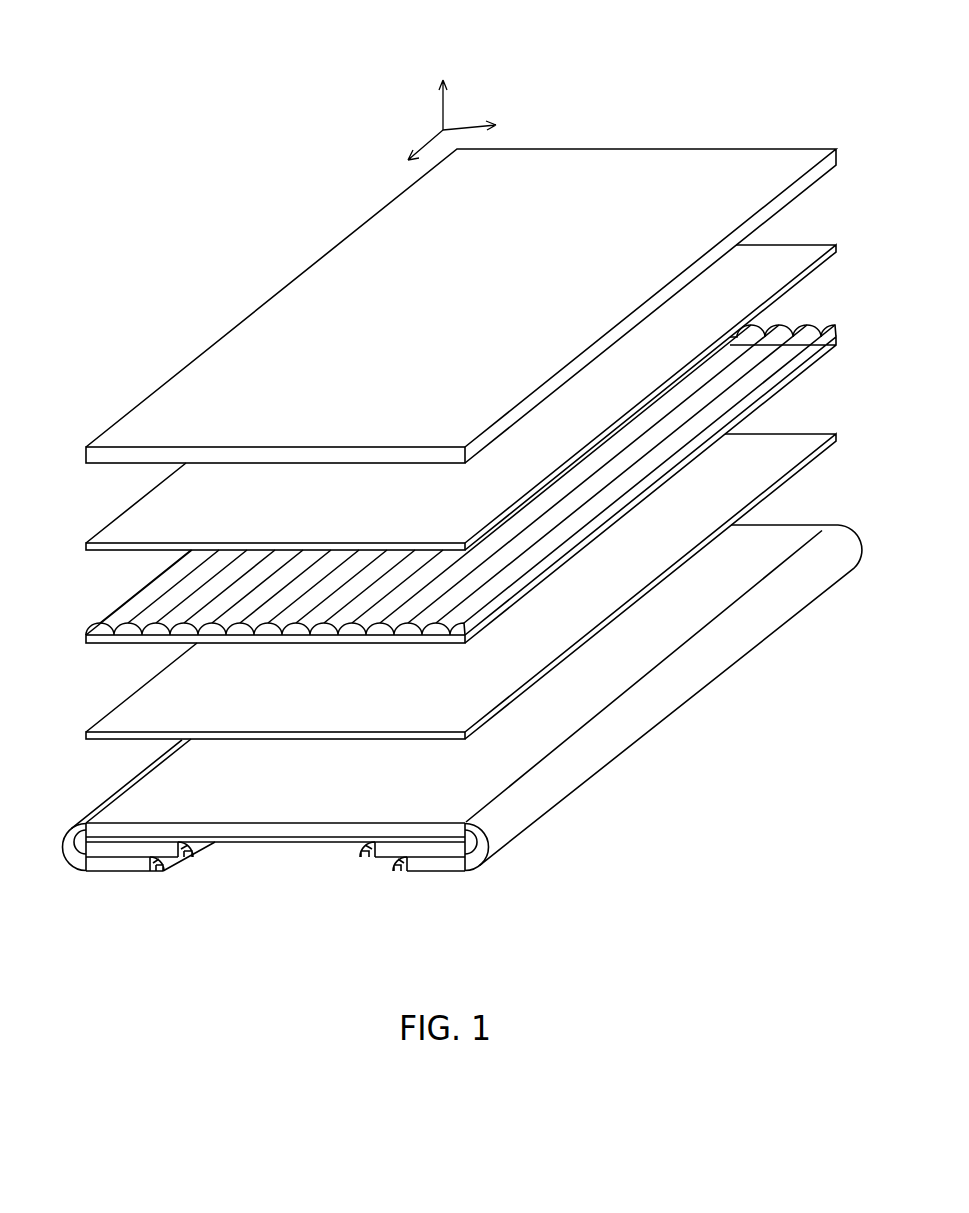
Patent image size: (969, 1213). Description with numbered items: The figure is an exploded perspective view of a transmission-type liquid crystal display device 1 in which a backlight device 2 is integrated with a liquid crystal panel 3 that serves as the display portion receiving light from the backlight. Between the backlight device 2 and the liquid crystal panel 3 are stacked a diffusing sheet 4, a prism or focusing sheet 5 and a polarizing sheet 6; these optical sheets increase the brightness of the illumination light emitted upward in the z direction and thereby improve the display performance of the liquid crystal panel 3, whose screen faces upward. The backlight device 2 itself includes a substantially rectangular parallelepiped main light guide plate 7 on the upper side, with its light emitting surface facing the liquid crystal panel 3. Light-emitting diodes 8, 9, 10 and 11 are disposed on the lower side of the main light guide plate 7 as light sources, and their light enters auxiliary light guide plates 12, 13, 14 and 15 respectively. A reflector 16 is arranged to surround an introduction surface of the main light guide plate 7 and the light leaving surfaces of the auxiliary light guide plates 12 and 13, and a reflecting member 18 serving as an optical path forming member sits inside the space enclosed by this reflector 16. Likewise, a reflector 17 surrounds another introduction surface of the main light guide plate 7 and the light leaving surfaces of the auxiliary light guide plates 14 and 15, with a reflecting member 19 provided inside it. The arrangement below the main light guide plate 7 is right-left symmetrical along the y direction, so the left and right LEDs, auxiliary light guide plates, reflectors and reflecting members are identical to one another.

The liquid crystal display device 1 is at (802, 90).
The backlight device 2 is at (794, 524).
The liquid crystal panel 3 is at (179, 393).
The diffusing sheet 4 is at (152, 697).
The prism sheet 5 is at (135, 607).
The polarizing sheet 6 is at (150, 513).
The main light guide plate 7 is at (279, 830).
The light-emitting diode 8 is at (186, 858).
The light-emitting diode 9 is at (154, 869).
The light-emitting diode 10 is at (363, 859).
The light-emitting diode 11 is at (395, 873).
The auxiliary light guide plate 12 is at (144, 850).
The auxiliary light guide plate 13 is at (112, 862).
The auxiliary light guide plate 14 is at (430, 851).
The auxiliary light guide plate 15 is at (455, 864).
The reflector 16 is at (58, 843).
The reflector 17 is at (668, 700).
The reflecting member 18 is at (76, 860).
The reflecting member 19 is at (486, 857).